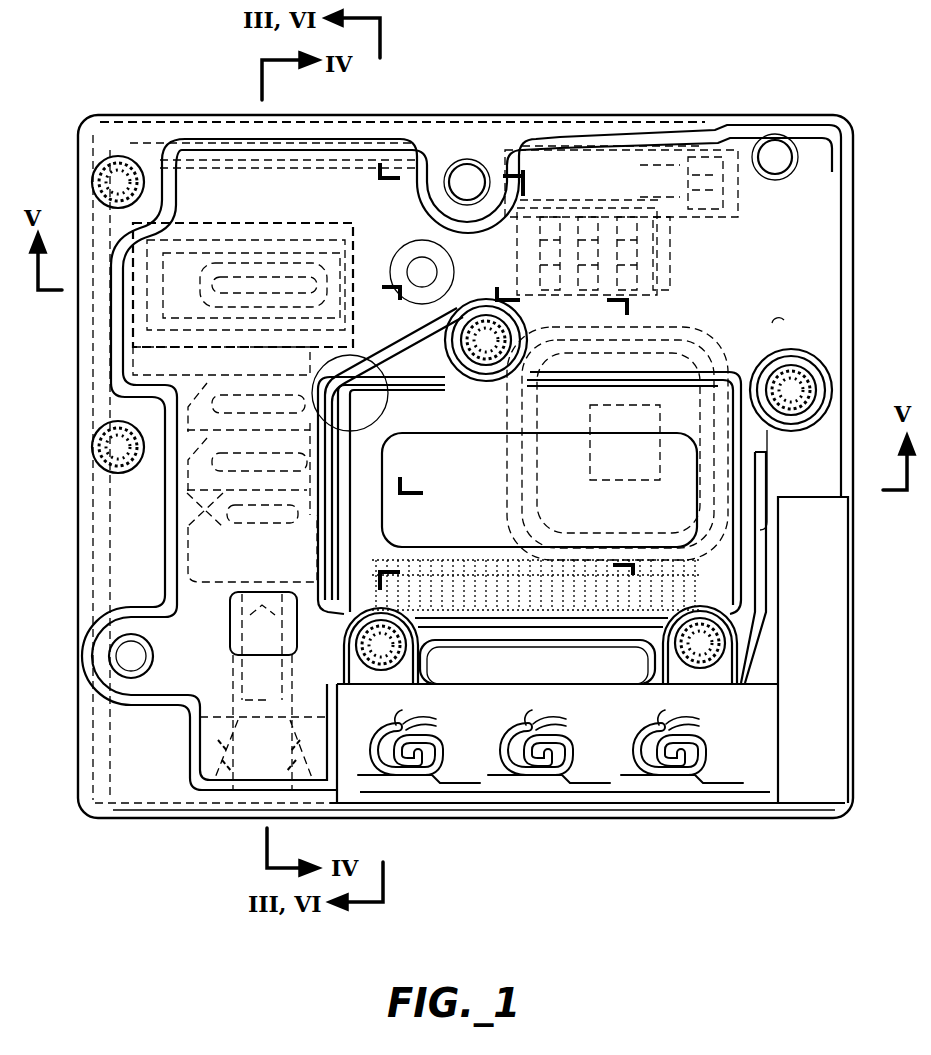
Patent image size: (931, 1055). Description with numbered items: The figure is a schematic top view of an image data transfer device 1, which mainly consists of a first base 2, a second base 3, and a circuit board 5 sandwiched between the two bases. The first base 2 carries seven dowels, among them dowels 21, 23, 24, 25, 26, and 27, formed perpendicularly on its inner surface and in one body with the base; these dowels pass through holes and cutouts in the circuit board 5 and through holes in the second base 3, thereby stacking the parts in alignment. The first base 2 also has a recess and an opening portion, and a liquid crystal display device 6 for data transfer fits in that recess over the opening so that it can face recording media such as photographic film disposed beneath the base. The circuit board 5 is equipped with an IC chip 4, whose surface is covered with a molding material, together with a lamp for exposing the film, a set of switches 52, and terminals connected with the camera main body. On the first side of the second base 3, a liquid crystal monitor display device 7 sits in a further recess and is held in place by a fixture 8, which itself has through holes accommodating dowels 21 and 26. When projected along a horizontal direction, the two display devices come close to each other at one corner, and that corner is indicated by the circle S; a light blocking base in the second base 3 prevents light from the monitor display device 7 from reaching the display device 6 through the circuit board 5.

The image data transfer device 1 is at (737, 78).
The first base 2 is at (152, 810).
The second base 3 is at (148, 700).
The IC chip 4 is at (628, 450).
The circuit board 5 is at (805, 775).
The display device for image data transfer 6 is at (257, 220).
The monitor display device 7 is at (703, 403).
The fixture 8 is at (676, 418).
The dowel 21 is at (712, 668).
The dowel 23 is at (104, 450).
The dowel 24 is at (118, 158).
The dowel 25 is at (468, 163).
The dowel 26 is at (486, 345).
The dowel 27 is at (815, 398).
The switches 52 is at (442, 767).
The circle S is at (350, 355).